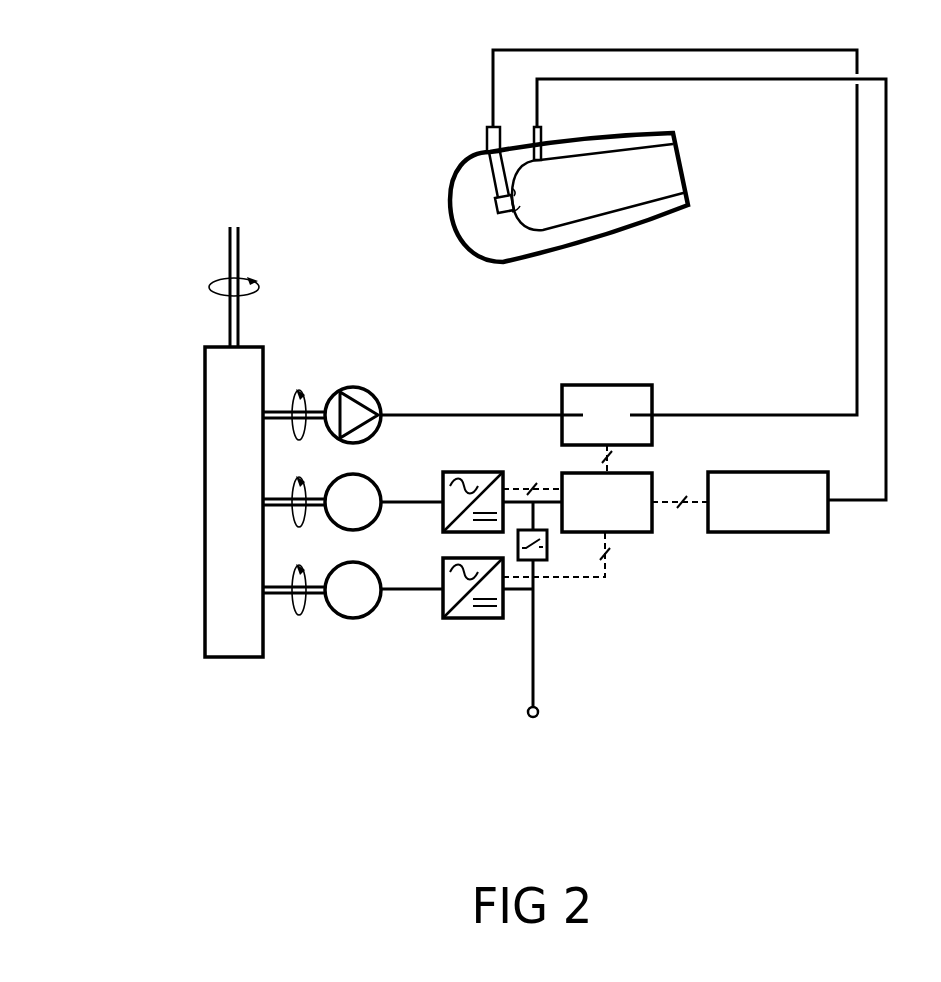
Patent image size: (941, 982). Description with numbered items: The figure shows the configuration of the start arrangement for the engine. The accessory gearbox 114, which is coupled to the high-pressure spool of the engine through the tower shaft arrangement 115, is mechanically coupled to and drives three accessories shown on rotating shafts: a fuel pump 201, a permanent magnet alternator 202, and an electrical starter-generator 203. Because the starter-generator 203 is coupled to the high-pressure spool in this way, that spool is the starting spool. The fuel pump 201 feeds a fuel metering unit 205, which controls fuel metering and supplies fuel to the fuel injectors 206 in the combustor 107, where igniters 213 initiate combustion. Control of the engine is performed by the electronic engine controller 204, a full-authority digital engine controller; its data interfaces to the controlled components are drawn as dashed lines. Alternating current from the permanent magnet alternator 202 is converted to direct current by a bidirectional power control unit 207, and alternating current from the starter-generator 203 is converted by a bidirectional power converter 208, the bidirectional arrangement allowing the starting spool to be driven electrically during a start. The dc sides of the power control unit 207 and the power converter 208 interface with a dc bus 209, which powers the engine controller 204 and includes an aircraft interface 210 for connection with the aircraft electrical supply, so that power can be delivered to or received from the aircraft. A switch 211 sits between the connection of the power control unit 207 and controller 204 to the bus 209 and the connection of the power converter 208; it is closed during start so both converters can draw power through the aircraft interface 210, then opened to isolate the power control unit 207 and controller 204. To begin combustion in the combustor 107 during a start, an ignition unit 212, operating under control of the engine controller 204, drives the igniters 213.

The combustor 107 is at (453, 222).
The accessory gearbox 114 is at (205, 347).
The tower shaft arrangement 115 is at (230, 241).
The fuel pump 201 is at (365, 389).
The permanent magnet alternator 202 is at (368, 477).
The electrical starter-generator 203 is at (368, 565).
The electronic engine controller 204 is at (636, 473).
The fuel metering unit 205 is at (638, 385).
The fuel injectors 206 is at (490, 138).
The bidirectional power control unit 207 is at (530, 457).
The bidirectional power converter 208 is at (443, 615).
The dc bus 209 is at (536, 630).
The aircraft interface 210 is at (528, 709).
The switch 211 is at (547, 550).
The ignition unit 212 is at (828, 522).
The igniters 213 is at (540, 131).